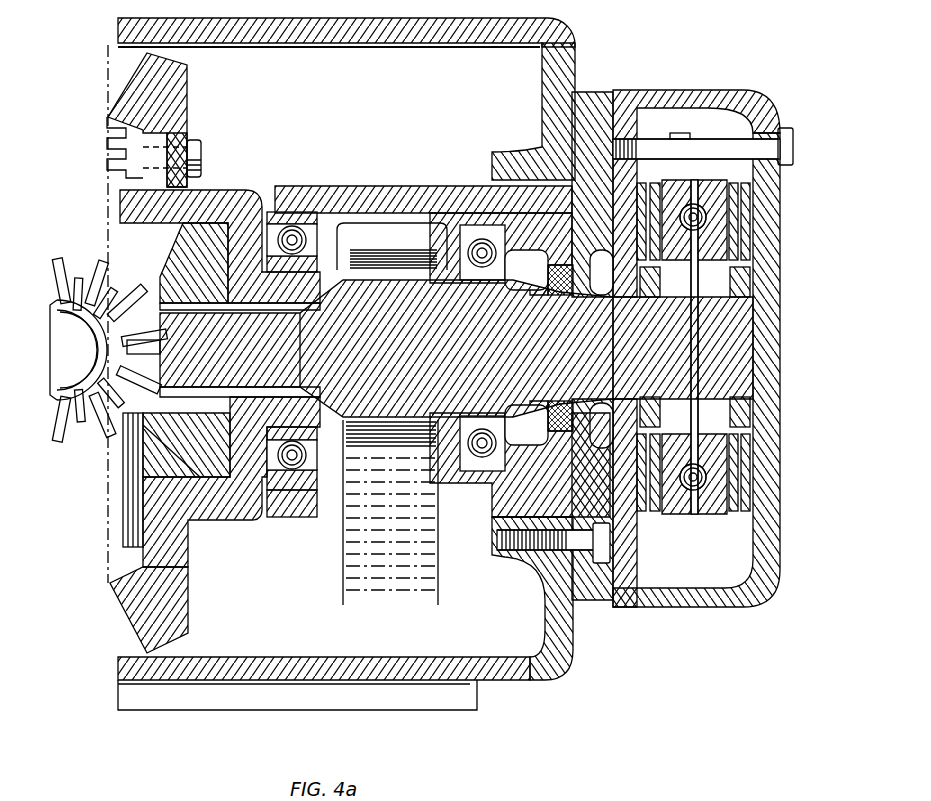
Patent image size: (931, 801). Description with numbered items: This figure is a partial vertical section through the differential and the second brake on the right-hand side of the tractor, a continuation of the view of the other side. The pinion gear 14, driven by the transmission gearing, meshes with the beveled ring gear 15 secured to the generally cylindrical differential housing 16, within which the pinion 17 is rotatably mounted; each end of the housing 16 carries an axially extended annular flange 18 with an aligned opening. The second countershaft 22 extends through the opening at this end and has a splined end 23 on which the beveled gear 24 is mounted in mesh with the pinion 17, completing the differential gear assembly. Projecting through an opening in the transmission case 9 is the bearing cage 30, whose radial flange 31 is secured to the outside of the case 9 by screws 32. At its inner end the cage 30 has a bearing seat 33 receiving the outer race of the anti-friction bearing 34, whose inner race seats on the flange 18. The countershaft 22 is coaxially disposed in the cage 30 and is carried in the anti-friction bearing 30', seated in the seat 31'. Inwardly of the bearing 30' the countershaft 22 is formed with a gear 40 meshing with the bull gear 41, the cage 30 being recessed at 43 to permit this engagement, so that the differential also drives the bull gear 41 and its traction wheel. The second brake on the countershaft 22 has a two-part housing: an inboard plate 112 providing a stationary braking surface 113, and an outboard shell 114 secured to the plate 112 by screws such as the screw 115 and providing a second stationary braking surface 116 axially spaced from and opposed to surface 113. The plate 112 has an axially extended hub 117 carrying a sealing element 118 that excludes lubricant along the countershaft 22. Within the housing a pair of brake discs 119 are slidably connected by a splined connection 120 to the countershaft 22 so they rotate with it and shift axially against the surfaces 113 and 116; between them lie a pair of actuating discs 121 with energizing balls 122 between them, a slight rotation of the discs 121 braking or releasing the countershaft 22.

The transmission case 9 is at (158, 700).
The pinion gear 14 is at (68, 270).
The beveled ring gear 15 is at (183, 85).
The differential housing 16 is at (220, 193).
The pinion 17 is at (145, 410).
The annular flange 18 is at (308, 300).
The second countershaft 22 is at (274, 347).
The splined end 23 is at (165, 348).
The beveled gear 24 is at (192, 262).
The bearing cage 30 is at (423, 181).
The anti-friction bearing 30' is at (520, 323).
The radial flange 31 is at (550, 575).
The seat 31' is at (462, 315).
The screws 32 is at (495, 538).
The bearing seat 33 is at (294, 228).
The anti-friction bearing 34 is at (290, 236).
The gear 40 is at (357, 256).
The bull gear 41 is at (355, 573).
The recess 43 is at (330, 505).
The inboard plate 112 is at (625, 93).
The stationary braking surface 113 is at (647, 200).
The outboard shell 114 is at (735, 90).
The screw 115 is at (788, 130).
The second stationary braking surface 116 is at (748, 207).
The hub 117 is at (590, 462).
The sealing element 118 is at (548, 280).
The brake discs 119 is at (648, 505).
The splined connection 120 is at (757, 301).
The actuating discs 121 is at (697, 515).
The energizing balls 122 is at (700, 218).